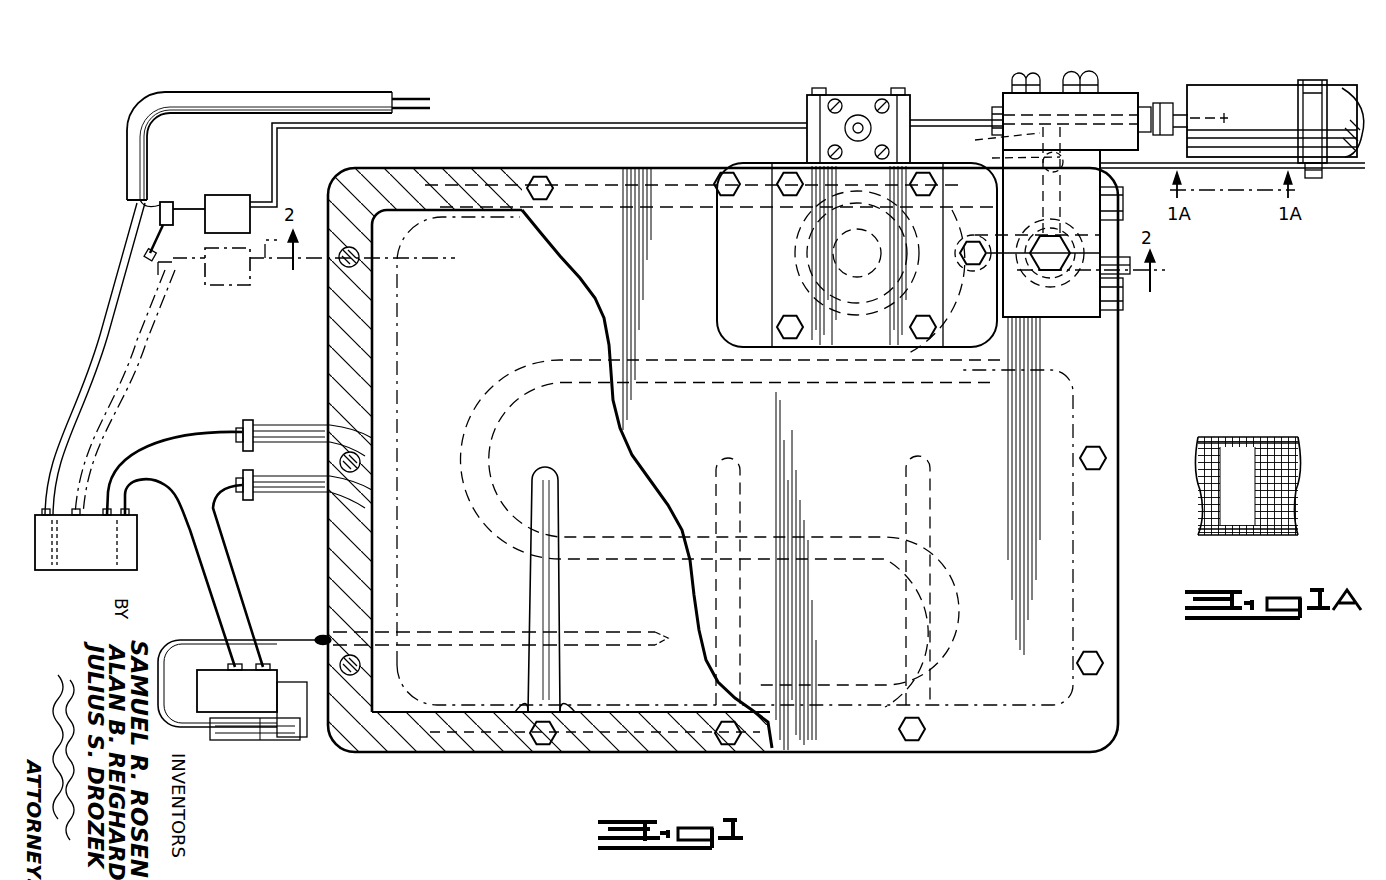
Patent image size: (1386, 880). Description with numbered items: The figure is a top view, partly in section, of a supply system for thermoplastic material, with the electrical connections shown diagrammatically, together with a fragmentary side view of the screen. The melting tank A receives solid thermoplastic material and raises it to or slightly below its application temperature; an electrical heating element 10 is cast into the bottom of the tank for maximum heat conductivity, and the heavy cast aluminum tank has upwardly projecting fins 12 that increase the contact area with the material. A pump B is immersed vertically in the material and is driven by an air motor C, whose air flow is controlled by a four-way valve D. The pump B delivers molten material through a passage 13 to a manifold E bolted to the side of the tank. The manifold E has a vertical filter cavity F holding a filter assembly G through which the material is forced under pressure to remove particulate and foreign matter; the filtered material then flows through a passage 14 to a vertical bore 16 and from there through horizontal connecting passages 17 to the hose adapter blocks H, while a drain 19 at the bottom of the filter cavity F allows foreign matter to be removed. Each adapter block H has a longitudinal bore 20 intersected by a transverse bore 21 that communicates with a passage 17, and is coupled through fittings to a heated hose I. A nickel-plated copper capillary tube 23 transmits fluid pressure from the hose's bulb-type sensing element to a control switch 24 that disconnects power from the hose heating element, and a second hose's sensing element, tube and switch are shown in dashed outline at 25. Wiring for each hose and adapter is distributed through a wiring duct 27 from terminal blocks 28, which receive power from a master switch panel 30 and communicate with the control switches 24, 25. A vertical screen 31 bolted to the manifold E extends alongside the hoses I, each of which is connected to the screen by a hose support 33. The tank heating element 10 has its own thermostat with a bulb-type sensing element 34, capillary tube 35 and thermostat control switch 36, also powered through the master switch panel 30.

In FIG. 1, the melting tank A is at (1120, 420).
In FIG. 1, the pump B is at (800, 262).
In FIG. 1, the air motor C is at (732, 226).
In FIG. 1, the four-way valve D is at (807, 118).
In FIG. 1, the manifold E is at (1087, 307).
In FIG. 1, the filter cavity F is at (1073, 243).
In FIG. 1, the filter assembly G is at (1040, 238).
In FIG. 1, the hose adapter block H is at (1003, 107).
In FIG. 1, the heated hose I is at (1242, 85).
In FIG. 1, the electrical heating element 10 is at (480, 395).
In FIG. 1, the fins 12 is at (548, 470).
In FIG. 1, the passage 13 is at (982, 250).
In FIG. 1, the passage 14 is at (1056, 218).
In FIG. 1, the vertical bore 16 is at (1060, 170).
In FIG. 1, the horizontal connecting passages 17 is at (1015, 154).
In FIG. 1, the drain 19 is at (1125, 273).
In FIG. 1, the longitudinal bore 20 is at (1120, 115).
In FIG. 1, the transverse bore 21 is at (996, 139).
In FIG. 1, the capillary tube 23 is at (630, 122).
In FIG. 1, the control switch 24 is at (230, 198).
In FIG. 1, the sensing element, capillary tube and control switch 25 is at (240, 285).
In FIG. 1, the wiring duct 27 is at (232, 92).
In FIG. 1, the terminal block 28 is at (165, 203).
In FIG. 1, the master switch panel 30 is at (137, 555).
In FIG. 1, the vertical screen 31 is at (1345, 172).
In FIG. 1A, the vertical screen 31 is at (1235, 450).
In FIG. 1, the hose support 33 is at (1315, 82).
In FIG. 1, the bulb-type sensing element 34 is at (470, 625).
In FIG. 1, the capillary tube 35 is at (300, 635).
In FIG. 1, the thermostat control switch 36 is at (172, 645).